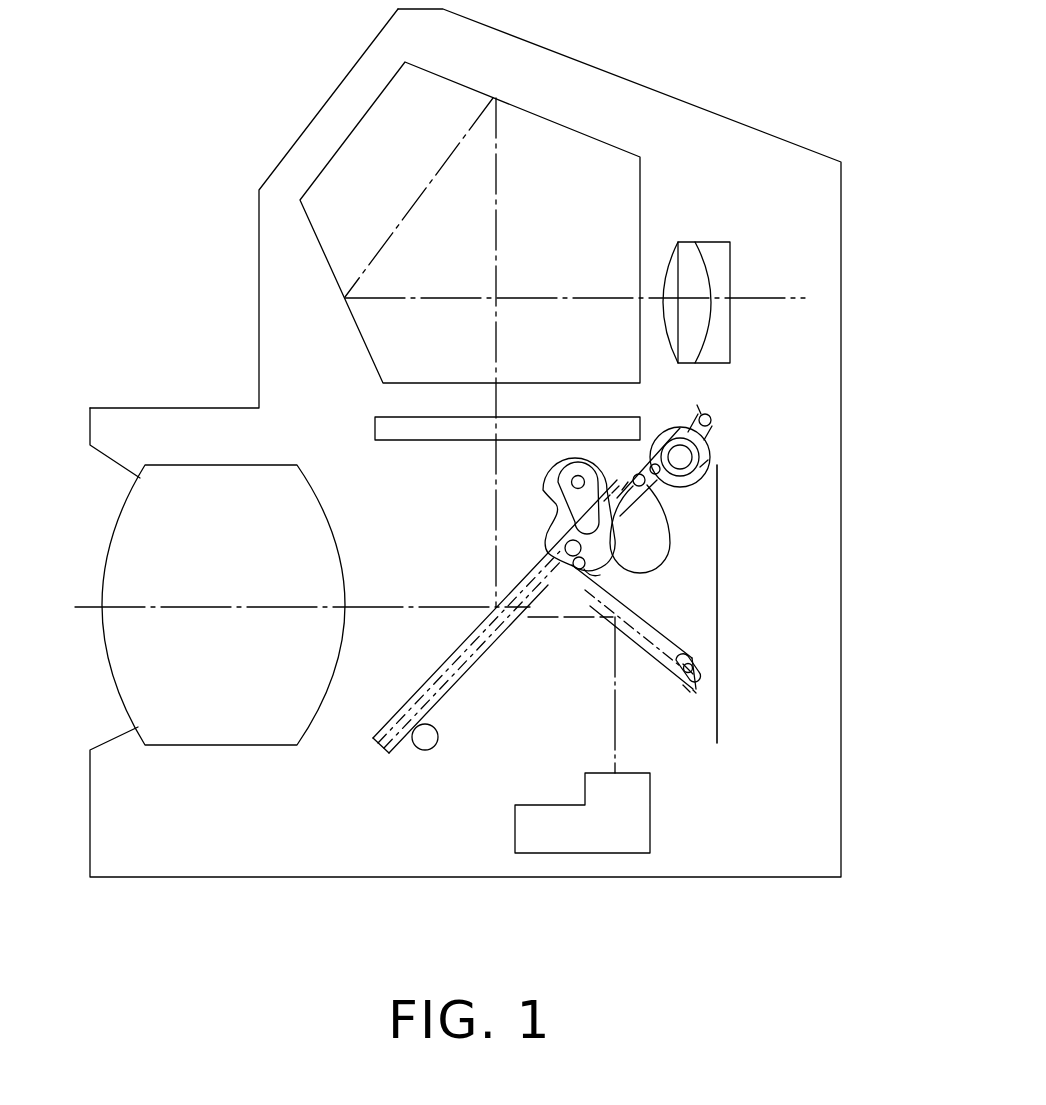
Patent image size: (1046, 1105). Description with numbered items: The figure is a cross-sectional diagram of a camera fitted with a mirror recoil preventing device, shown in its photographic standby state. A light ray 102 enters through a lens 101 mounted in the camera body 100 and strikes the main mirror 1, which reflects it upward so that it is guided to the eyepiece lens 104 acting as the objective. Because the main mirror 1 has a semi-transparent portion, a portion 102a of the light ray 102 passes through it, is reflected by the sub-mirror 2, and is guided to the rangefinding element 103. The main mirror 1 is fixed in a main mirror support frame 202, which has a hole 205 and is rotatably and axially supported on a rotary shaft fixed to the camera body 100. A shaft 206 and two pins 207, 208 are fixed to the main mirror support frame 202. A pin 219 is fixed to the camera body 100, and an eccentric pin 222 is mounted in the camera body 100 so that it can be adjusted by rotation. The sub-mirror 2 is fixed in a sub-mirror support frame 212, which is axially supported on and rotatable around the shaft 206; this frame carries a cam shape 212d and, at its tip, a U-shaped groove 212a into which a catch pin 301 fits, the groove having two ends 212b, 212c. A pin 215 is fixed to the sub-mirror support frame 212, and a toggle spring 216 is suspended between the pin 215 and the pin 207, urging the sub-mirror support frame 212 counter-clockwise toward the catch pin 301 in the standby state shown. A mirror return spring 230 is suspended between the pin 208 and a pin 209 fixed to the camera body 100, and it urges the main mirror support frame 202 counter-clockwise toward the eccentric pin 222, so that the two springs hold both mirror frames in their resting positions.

The main mirror 1 is at (394, 730).
The sub-mirror 2 is at (655, 656).
The camera body 100 is at (716, 877).
The lens 101 is at (190, 482).
The light ray 102 is at (352, 606).
The portion of the light ray 102a is at (580, 618).
The rangefinding element 103 is at (560, 845).
The eyepiece lens 104 is at (720, 242).
The main mirror support frame 202 is at (709, 449).
The hole 205 is at (704, 465).
The shaft 206 is at (603, 542).
The pin 207 is at (660, 505).
The pin 208 is at (698, 485).
The pin 209 is at (709, 432).
The sub-mirror support frame 212 is at (663, 667).
The U-shaped groove 212a is at (683, 687).
The end of the U-shaped groove 212b is at (693, 693).
The end of the U-shaped groove 212c is at (693, 663).
The cam shape 212d is at (548, 503).
The pin 215 is at (586, 565).
The toggle spring 216 is at (582, 548).
The pin 219 is at (577, 481).
The eccentric pin 222 is at (425, 750).
The mirror return spring 230 is at (707, 413).
The catch pin 301 is at (700, 668).